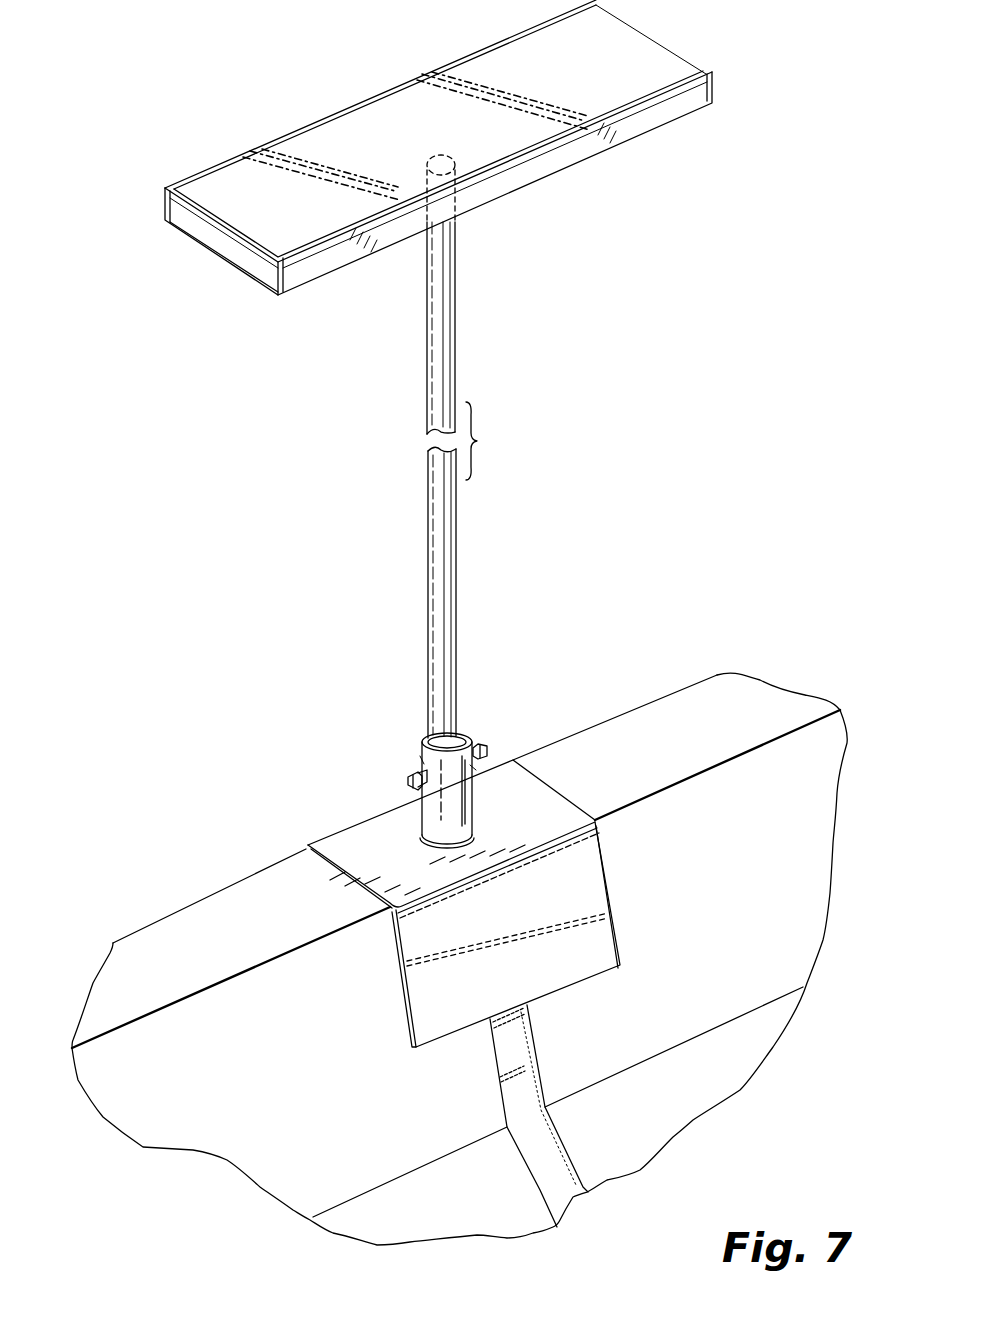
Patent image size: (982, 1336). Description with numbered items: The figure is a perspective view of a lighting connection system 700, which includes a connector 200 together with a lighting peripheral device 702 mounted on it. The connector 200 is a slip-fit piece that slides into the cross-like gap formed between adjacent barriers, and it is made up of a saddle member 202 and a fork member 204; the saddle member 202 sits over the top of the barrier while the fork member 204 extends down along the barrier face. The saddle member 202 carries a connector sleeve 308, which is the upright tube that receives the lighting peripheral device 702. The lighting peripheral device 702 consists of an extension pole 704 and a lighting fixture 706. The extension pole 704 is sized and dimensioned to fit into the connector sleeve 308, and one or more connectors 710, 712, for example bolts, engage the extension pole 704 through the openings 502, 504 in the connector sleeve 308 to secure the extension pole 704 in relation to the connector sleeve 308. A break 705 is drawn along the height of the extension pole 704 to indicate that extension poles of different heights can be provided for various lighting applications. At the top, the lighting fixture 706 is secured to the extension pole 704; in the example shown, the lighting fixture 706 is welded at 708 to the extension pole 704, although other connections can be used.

The lighting connection system 700 is at (158, 153).
The lighting peripheral device 702 is at (563, 238).
The extension pole 704 is at (426, 301).
The break 705 is at (489, 441).
The lighting fixture 706 is at (243, 262).
The weld 708 is at (428, 158).
The connector 710 is at (407, 789).
The connector 712 is at (487, 748).
The connector 200 is at (485, 684).
The saddle member 202 is at (303, 839).
The fork member 204 is at (509, 1049).
The connector sleeve 308 is at (440, 826).
The opening 502 is at (421, 760).
The opening 504 is at (484, 768).